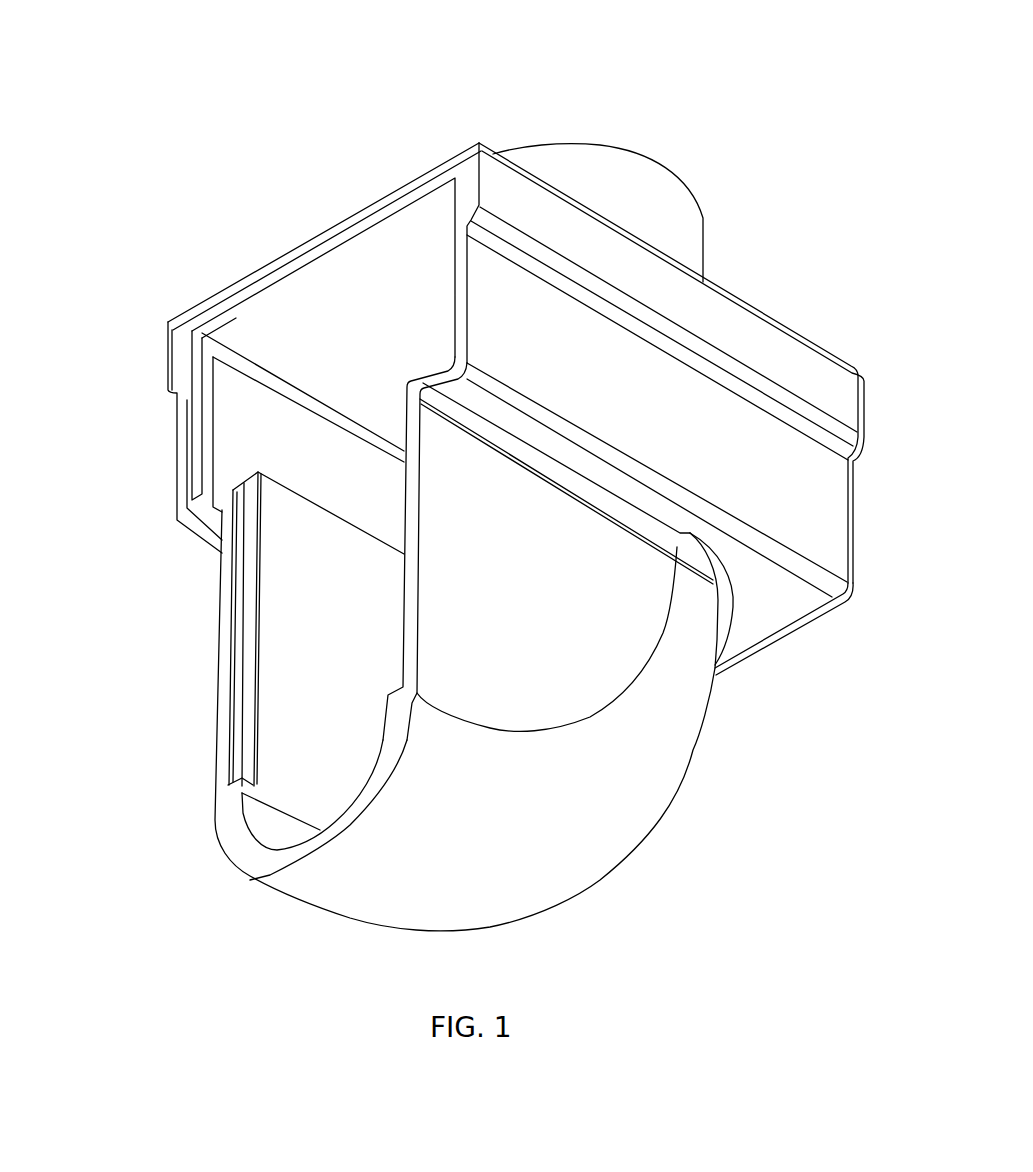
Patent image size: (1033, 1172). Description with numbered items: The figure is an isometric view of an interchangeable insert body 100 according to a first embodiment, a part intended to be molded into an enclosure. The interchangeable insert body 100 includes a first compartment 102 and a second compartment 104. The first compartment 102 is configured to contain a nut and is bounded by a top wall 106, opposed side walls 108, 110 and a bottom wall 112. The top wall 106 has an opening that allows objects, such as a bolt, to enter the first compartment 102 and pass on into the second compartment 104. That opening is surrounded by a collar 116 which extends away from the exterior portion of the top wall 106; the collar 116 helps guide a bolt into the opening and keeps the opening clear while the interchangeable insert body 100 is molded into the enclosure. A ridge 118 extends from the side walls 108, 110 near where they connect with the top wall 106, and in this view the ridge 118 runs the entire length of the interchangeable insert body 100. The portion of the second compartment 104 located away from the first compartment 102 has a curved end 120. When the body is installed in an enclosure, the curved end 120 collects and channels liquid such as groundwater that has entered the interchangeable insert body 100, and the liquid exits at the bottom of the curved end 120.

The interchangeable insert body 100 is at (100, 75).
The first compartment 102 is at (284, 414).
The second compartment 104 is at (284, 642).
The top wall 106 is at (350, 278).
The side wall 108 is at (830, 527).
The side wall 110 is at (237, 447).
The bottom wall 112 is at (788, 603).
The collar 116 is at (675, 213).
The ridge 118 is at (167, 347).
The curved end 120 is at (568, 855).